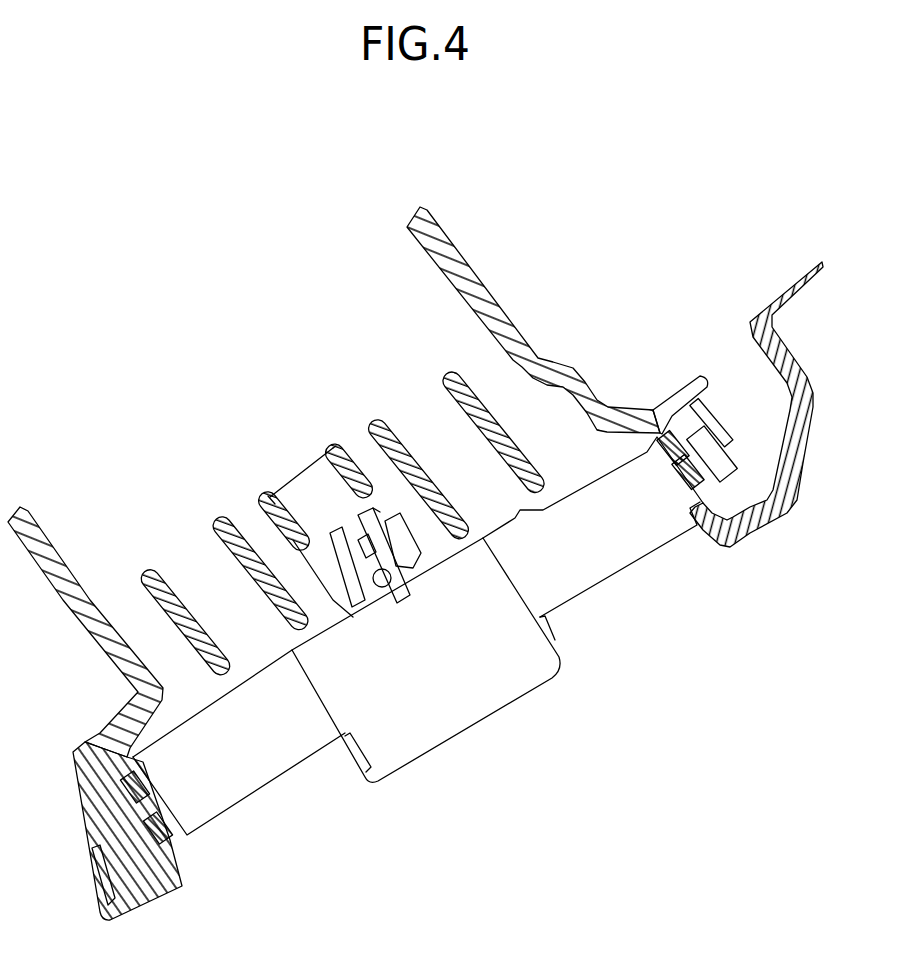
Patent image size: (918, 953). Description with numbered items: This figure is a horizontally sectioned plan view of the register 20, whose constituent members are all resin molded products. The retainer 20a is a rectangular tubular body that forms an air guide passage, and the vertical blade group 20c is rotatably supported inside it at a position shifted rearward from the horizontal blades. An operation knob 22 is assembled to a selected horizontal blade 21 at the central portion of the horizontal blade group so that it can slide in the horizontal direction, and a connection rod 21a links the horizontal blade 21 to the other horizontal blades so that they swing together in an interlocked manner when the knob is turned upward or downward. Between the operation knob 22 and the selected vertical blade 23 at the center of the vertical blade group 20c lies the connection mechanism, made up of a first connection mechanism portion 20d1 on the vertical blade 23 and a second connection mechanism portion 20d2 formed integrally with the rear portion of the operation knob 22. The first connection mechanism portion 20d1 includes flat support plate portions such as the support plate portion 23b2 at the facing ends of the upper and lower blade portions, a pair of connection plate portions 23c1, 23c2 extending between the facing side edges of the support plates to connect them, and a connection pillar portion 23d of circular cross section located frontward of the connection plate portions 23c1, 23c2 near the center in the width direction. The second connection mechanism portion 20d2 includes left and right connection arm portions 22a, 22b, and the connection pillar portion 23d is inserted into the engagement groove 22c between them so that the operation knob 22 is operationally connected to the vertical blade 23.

The register 20 is at (143, 425).
The retainer 20a is at (78, 618).
The vertical blade group 20c is at (490, 392).
The first connection mechanism portion 20d1 is at (313, 450).
The second connection mechanism portion 20d2 is at (383, 512).
The horizontal blade 21 is at (620, 572).
The connection rod 21a is at (713, 410).
The operation knob 22 is at (468, 732).
The connection arm portion 22a is at (372, 604).
The connection arm portion 22b is at (403, 576).
The engagement groove 22c is at (360, 548).
The vertical blade 23 is at (330, 600).
The support plate portion 23b2 is at (288, 488).
The connection plate portion 23c1 is at (277, 527).
The connection plate portion 23c2 is at (336, 452).
The connection pillar portion 23d is at (388, 586).